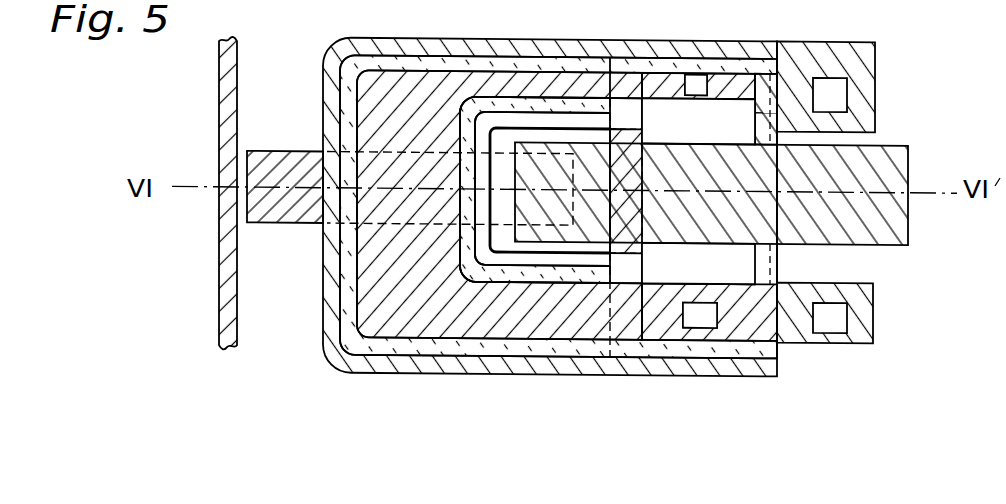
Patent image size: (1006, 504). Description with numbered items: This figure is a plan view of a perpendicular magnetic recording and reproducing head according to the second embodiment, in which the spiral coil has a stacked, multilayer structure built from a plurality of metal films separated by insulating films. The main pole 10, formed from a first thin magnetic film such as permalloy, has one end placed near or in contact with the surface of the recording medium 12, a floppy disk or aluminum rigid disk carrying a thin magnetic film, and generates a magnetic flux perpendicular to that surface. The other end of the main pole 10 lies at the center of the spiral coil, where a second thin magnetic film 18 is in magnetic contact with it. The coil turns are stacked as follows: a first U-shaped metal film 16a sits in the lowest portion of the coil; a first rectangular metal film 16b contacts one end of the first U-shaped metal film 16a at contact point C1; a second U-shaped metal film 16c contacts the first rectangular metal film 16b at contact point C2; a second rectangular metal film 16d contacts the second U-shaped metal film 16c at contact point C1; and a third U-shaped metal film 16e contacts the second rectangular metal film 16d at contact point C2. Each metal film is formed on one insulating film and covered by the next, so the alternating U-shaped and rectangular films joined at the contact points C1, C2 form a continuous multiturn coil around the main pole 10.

The main pole 10 is at (278, 155).
The recording medium 12 is at (219, 98).
The first U-shaped metal film 16a is at (480, 96).
The first rectangular metal film 16b is at (641, 37).
The second U-shaped metal film 16c is at (592, 61).
The second rectangular metal film 16d is at (720, 94).
The third U-shaped metal film 16e is at (560, 98).
The second thin magnetic film 18 is at (912, 142).
The contact point C1 is at (717, 312).
The contact point C2 is at (705, 91).